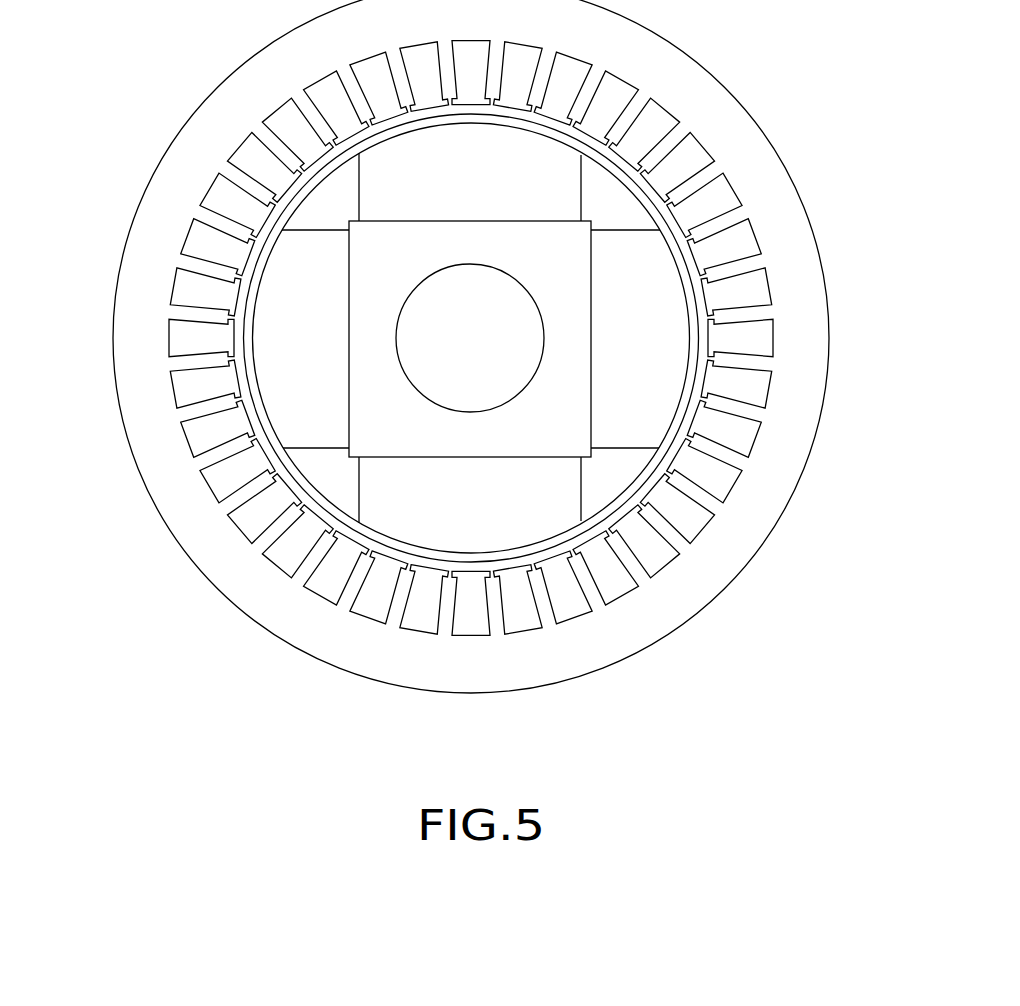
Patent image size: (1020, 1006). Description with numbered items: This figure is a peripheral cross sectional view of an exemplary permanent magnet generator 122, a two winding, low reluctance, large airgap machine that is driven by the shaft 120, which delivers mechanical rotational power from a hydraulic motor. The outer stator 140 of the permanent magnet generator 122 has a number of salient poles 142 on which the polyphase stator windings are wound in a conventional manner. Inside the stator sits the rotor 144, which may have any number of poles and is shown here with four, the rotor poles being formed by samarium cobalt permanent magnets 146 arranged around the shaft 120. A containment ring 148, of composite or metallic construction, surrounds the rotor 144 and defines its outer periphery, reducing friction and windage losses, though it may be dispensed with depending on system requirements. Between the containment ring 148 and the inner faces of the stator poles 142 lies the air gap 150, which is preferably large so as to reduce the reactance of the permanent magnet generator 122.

The shaft 120 is at (504, 355).
The permanent magnet generator 122 is at (860, 180).
The stator 140 is at (742, 533).
The salient poles 142 is at (713, 450).
The rotor 144 is at (546, 329).
The samarium cobalt permanent magnets 146 is at (497, 192).
The containment ring 148 is at (260, 275).
The air gap 150 is at (283, 478).